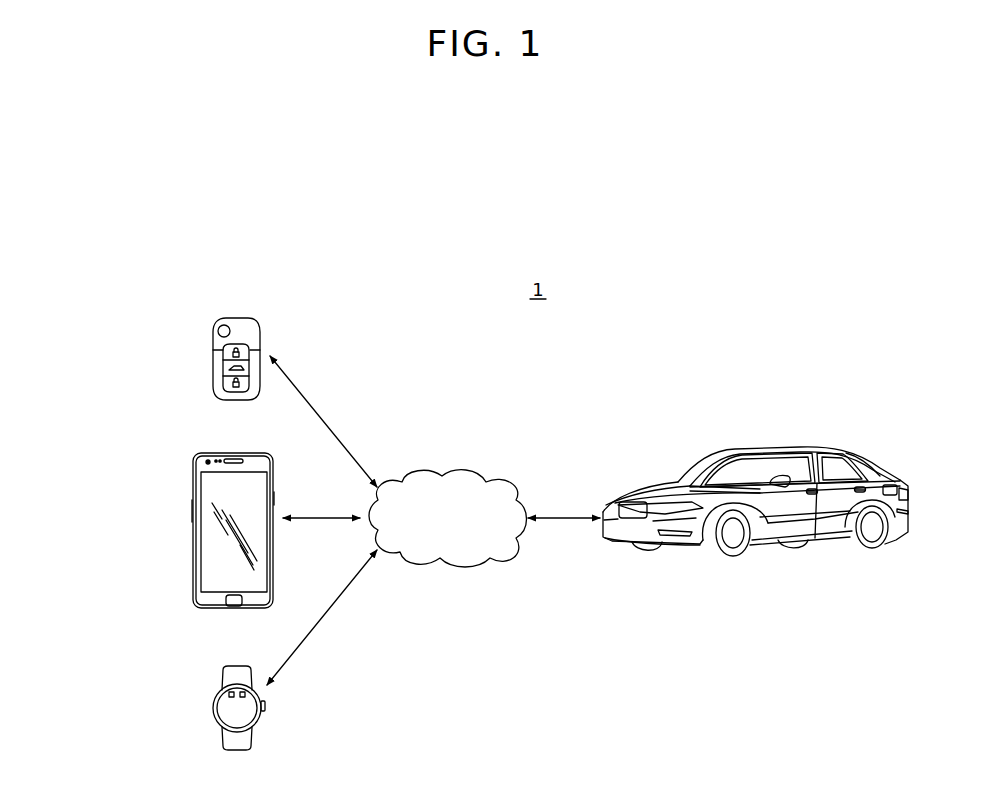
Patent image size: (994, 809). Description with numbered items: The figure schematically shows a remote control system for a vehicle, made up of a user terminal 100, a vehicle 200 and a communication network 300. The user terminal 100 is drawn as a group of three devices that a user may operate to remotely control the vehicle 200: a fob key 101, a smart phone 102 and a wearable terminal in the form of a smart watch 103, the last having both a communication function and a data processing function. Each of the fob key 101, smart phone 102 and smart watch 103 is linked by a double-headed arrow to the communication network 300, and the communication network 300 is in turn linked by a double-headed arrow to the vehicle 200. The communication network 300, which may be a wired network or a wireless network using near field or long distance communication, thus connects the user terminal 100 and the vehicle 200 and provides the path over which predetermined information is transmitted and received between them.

The user terminal 100 is at (96, 467).
The fob key 101 is at (205, 387).
The smart phone 102 is at (193, 530).
The smart watch 103 is at (208, 688).
The vehicle 200 is at (773, 448).
The communication network 300 is at (441, 473).